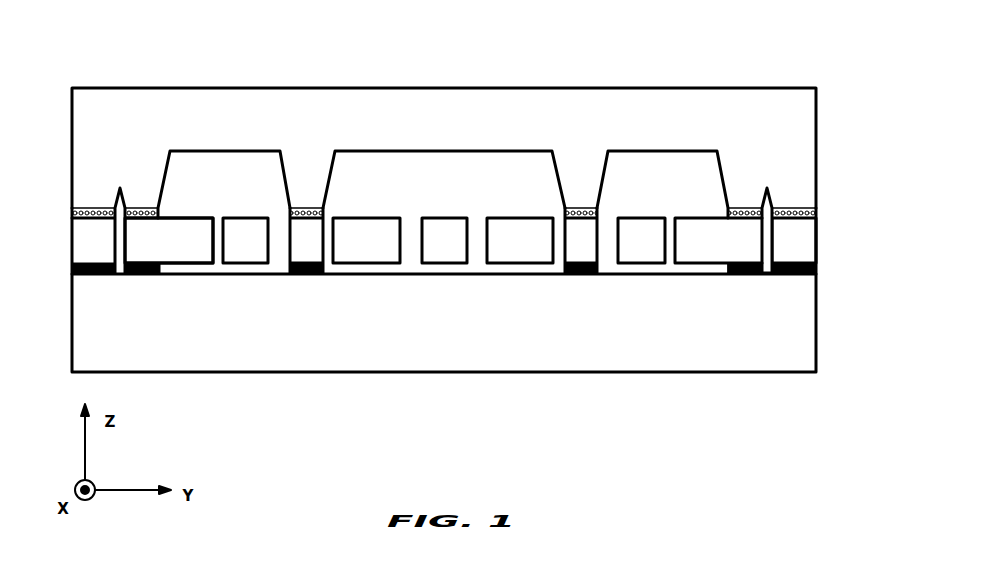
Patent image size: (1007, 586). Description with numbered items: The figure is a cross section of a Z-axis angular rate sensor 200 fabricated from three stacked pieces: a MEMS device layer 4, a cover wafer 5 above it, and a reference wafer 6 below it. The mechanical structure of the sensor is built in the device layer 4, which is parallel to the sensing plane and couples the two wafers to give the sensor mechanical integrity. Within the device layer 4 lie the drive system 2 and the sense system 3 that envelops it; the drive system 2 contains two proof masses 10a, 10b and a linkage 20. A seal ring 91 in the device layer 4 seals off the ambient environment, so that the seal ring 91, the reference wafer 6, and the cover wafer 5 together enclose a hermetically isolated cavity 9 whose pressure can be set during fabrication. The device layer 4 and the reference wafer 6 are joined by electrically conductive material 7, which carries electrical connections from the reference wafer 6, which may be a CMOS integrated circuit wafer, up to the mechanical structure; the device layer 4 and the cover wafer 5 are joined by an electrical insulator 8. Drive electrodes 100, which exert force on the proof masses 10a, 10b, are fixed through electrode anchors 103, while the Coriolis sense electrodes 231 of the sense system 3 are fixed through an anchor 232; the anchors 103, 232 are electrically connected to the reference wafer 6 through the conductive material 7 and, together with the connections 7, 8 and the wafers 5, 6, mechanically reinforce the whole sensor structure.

The drive system 2 is at (587, 199).
The sense system 3 is at (268, 203).
The MEMS device layer 4 is at (50, 218).
The cover wafer 5 is at (48, 88).
The reference wafer 6 is at (48, 283).
The electrically conductive material 7 is at (88, 275).
The electrical insulator 8 is at (143, 219).
The cavity 9 is at (515, 175).
The proof mass 10a is at (355, 240).
The proof mass 10b is at (508, 240).
The linkage 20 is at (438, 247).
The seal ring 91 is at (94, 242).
The drive electrodes 100 is at (307, 248).
The electrode anchors 103 is at (290, 253).
The Z-axis rate sensor 200 is at (257, 240).
The Coriolis sense electrodes 231 is at (165, 266).
The anchor 232 is at (747, 263).